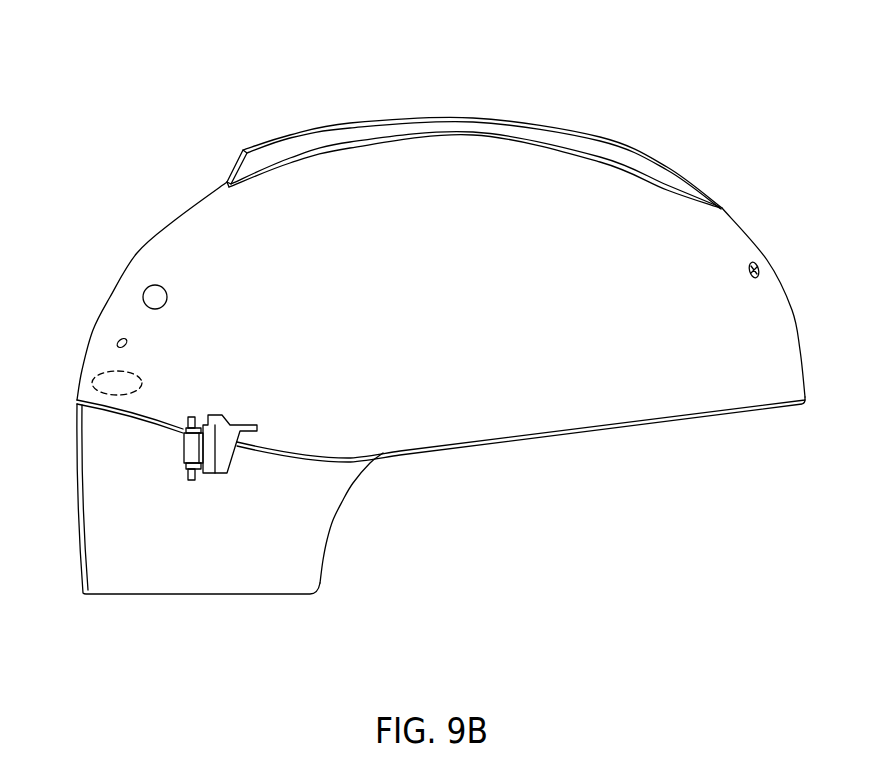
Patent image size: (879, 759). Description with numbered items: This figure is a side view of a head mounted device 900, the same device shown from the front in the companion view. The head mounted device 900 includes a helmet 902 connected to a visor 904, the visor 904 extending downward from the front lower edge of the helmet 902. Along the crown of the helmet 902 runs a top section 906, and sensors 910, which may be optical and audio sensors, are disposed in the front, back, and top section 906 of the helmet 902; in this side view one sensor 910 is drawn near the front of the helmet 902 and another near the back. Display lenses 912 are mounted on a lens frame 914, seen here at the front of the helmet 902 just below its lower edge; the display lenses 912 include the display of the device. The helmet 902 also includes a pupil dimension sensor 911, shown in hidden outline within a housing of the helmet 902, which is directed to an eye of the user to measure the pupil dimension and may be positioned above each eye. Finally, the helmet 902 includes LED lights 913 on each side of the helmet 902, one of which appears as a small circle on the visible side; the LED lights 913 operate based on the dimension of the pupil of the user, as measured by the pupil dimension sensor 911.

The head mounted device 900 is at (626, 41).
The helmet 902 is at (653, 421).
The visor 904 is at (333, 540).
The top section 906 is at (458, 118).
The sensors 910 is at (117, 339).
The pupil dimension sensor 911 is at (93, 381).
The display lenses 912 is at (182, 458).
The LED lights 913 is at (147, 285).
The lens frame 914 is at (233, 458).